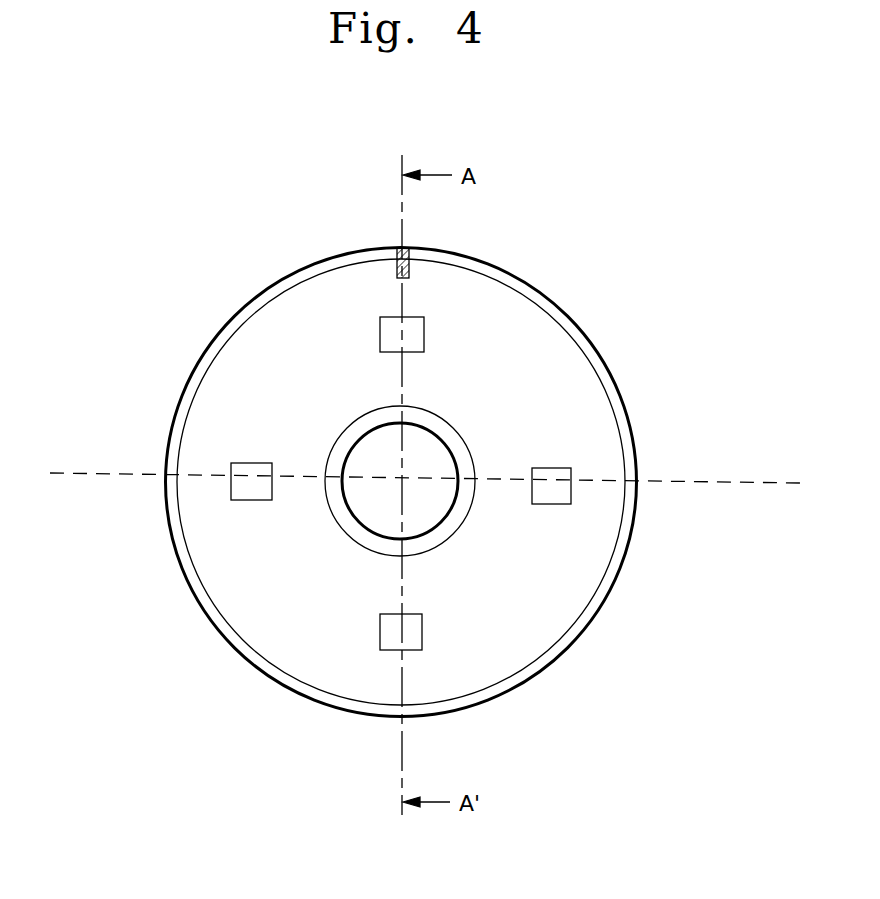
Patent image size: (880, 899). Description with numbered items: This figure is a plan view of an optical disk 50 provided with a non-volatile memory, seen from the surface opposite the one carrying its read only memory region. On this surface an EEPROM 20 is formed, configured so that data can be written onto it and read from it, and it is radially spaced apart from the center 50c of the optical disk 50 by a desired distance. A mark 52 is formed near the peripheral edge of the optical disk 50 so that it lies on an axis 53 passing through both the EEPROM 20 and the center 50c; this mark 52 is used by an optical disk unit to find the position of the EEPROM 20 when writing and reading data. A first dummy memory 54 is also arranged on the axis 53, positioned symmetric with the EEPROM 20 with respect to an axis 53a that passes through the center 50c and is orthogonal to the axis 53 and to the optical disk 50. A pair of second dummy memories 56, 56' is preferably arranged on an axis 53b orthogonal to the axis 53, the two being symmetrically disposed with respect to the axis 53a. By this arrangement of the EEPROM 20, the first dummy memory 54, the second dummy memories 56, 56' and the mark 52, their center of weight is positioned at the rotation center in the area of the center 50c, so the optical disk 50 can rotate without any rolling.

The optical disk 50 is at (238, 169).
The center 50c is at (402, 478).
The mark 52 is at (408, 262).
The EEPROM 20 is at (427, 336).
The axis 53 is at (403, 770).
The axis 53a is at (401, 480).
The axis 53b is at (767, 480).
The first dummy memory 54 is at (416, 637).
The second dummy memory 56 is at (621, 486).
The second dummy memory 56' is at (183, 487).